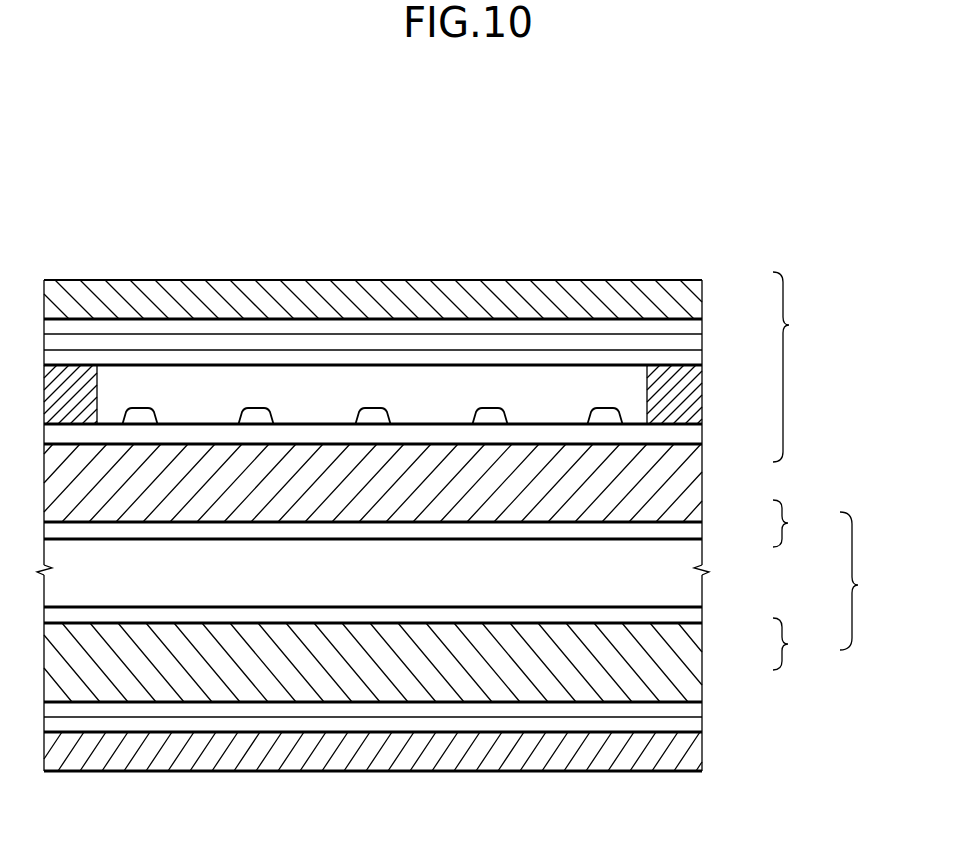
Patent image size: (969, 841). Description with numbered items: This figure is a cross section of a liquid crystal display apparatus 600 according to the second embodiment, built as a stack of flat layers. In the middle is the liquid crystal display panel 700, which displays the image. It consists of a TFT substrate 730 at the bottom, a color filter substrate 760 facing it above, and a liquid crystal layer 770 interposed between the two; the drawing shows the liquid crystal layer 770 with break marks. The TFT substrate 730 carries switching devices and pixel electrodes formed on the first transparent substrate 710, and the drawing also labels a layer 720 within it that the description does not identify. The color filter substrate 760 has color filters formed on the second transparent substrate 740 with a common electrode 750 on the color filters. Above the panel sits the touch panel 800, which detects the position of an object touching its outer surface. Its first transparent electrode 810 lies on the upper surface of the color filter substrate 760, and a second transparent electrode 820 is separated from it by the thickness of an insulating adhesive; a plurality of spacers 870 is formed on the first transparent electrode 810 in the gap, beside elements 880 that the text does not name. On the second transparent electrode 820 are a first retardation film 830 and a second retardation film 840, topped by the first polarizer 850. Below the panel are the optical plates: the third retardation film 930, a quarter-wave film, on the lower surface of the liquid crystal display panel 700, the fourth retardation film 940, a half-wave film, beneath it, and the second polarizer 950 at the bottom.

The liquid crystal display apparatus 600 is at (415, 172).
The liquid crystal display panel 700 is at (869, 581).
The first transparent substrate 710 is at (702, 672).
The lower substrate 720 is at (702, 614).
The TFT substrate 730 is at (802, 644).
The second transparent substrate 740 is at (702, 483).
The common electrode 750 is at (702, 527).
The color filter substrate 760 is at (802, 523).
The liquid crystal layer 770 is at (702, 587).
The touch panel 800 is at (801, 367).
The first transparent electrode 810 is at (702, 434).
The second transparent electrode 820 is at (702, 358).
The first retardation film 830 is at (702, 345).
The second retardation film 840 is at (702, 327).
The first polarizer 850 is at (702, 285).
The spacers 870 is at (605, 408).
The sealing spacer 880 is at (702, 396).
The third retardation film 930 is at (702, 709).
The fourth retardation film 940 is at (702, 724).
The second polarizer 950 is at (702, 752).